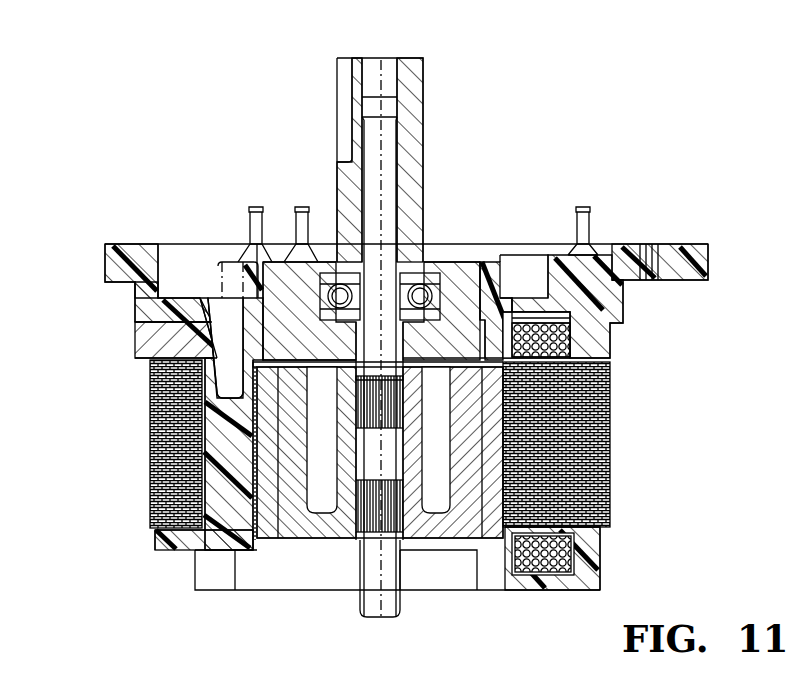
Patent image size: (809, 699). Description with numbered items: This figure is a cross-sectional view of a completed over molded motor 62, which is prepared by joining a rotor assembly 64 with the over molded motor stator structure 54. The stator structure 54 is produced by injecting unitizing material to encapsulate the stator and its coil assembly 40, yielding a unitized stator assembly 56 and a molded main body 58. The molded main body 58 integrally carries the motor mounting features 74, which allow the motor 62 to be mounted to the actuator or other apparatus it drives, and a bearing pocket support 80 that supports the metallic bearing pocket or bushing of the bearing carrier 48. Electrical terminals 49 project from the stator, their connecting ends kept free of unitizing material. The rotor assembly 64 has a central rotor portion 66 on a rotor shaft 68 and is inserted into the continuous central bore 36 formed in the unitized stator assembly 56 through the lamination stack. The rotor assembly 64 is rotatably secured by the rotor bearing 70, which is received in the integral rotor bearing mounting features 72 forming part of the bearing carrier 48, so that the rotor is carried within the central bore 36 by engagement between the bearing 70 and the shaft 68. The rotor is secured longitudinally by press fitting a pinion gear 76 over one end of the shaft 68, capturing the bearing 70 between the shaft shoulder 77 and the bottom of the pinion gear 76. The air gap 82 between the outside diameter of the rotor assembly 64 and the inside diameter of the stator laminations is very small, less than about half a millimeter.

The central bore 36 is at (505, 593).
The coil assembly 40 is at (570, 345).
The bearing carrier 48 is at (482, 258).
The electrical terminals 49 is at (585, 212).
The over molded motor stator structure 54 is at (208, 244).
The unitized stator assembly 56 is at (610, 440).
The molded main body 58 is at (140, 244).
The over molded motor 62 is at (72, 203).
The rotor assembly 64 is at (270, 535).
The central rotor portion 66 is at (316, 514).
The rotor shaft 68 is at (372, 200).
The rotor bearing 70 is at (440, 238).
The rotor bearing mounting features 72 is at (465, 263).
The motor mounting features 74 is at (672, 244).
The pinion gear 76 is at (424, 96).
The shaft shoulder 77 is at (350, 240).
The bearing pocket support 80 is at (497, 303).
The air gap 82 is at (257, 548).